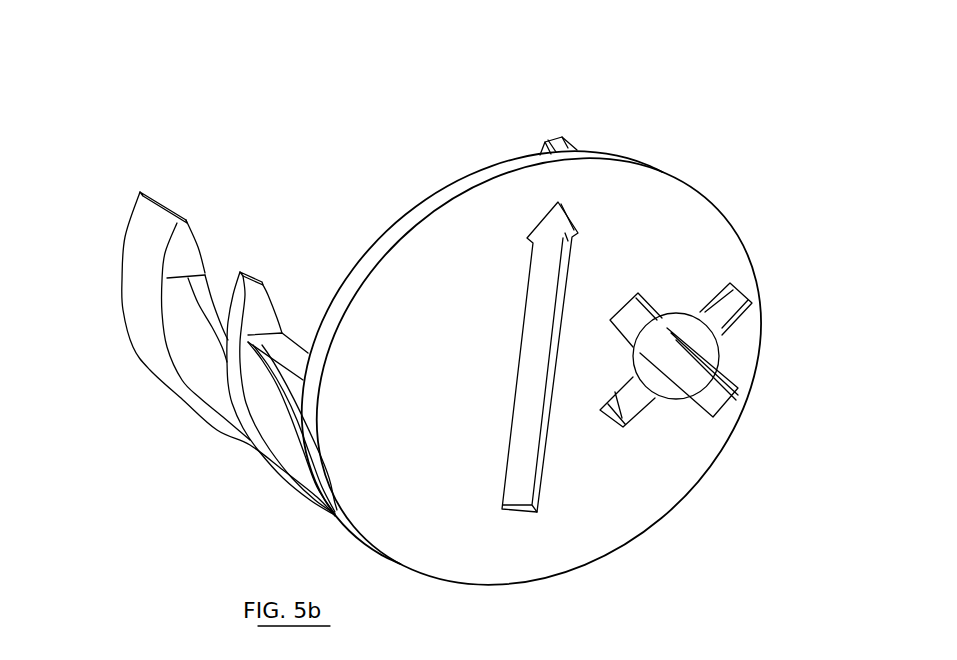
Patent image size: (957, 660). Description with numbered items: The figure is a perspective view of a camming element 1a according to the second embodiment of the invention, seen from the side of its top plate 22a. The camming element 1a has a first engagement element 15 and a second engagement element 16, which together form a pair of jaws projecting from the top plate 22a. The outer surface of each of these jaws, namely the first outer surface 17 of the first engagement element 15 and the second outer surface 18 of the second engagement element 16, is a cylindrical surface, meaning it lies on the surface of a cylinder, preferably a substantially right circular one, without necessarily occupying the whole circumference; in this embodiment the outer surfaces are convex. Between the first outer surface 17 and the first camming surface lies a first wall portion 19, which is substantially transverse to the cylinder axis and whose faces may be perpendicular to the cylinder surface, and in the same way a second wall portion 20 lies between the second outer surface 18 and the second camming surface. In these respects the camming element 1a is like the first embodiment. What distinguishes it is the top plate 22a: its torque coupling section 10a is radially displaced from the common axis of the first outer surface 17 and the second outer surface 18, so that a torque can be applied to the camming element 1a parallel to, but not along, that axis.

The camming element 1a is at (440, 142).
The top plate 22a is at (657, 215).
The torque coupling section 10a is at (682, 355).
The first engagement element 15 is at (170, 189).
The second engagement element 16 is at (265, 262).
The first outer surface 17 is at (148, 303).
The second outer surface 18 is at (238, 400).
The first wall portion 19 is at (212, 383).
The second wall portion 20 is at (297, 458).